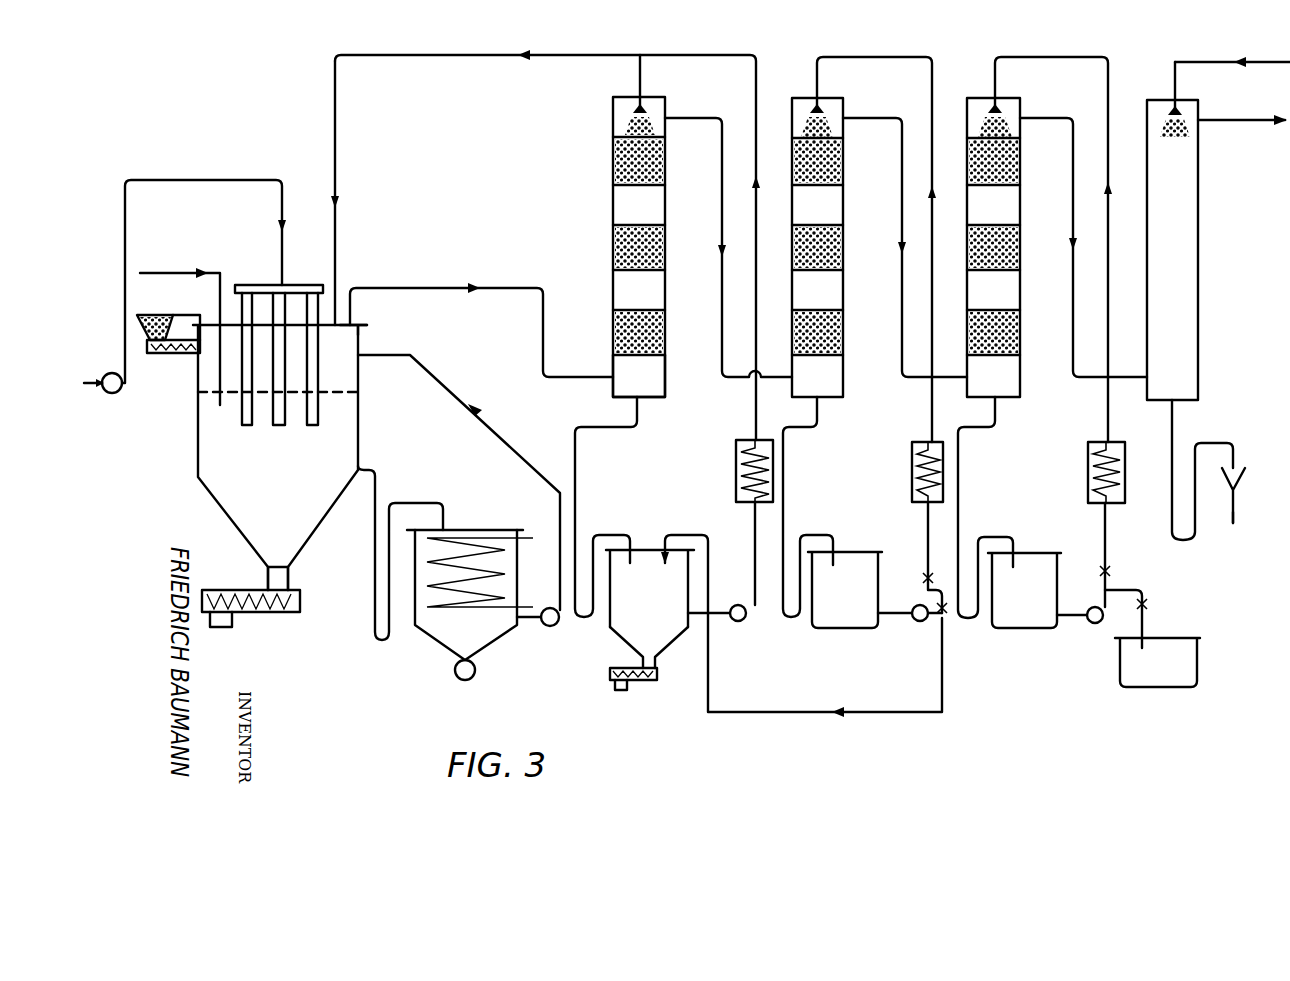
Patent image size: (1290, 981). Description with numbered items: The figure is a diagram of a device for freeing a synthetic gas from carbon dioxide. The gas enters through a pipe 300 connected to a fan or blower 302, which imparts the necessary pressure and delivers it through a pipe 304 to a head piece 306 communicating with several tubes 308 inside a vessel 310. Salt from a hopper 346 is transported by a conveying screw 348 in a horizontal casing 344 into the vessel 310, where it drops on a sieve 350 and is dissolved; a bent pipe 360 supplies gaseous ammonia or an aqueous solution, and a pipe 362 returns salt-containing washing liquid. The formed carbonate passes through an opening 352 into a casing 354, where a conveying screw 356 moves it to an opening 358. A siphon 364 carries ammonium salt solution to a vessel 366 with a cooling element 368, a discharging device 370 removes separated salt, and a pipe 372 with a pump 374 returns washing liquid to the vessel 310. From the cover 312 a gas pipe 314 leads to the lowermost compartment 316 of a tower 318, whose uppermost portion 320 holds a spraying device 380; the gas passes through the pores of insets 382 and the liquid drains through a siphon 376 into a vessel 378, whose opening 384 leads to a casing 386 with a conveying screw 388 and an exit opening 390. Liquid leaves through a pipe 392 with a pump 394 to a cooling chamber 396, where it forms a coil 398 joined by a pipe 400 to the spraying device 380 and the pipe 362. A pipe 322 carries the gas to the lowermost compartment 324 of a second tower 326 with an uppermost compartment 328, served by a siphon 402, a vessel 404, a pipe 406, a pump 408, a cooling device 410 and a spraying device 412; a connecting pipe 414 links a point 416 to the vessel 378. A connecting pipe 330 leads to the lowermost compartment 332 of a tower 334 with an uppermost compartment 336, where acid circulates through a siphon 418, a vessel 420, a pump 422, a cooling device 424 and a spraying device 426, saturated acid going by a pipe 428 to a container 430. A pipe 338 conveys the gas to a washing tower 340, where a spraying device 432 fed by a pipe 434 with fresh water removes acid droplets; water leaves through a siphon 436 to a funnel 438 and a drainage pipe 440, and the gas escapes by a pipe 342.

The pipe 300 is at (104, 397).
The fan or blower 302 is at (120, 392).
The pipe 304 is at (202, 180).
The head piece 306 is at (263, 283).
The tubes 308 is at (247, 427).
The vessel 310 is at (360, 422).
The cover 312 is at (358, 330).
The gas pipe 314 is at (468, 295).
The lowermost compartment 316 is at (652, 399).
The tower 318 is at (645, 213).
The uppermost portion 320 is at (668, 108).
The pipe 322 is at (718, 297).
The lowermost compartment 324 is at (832, 398).
The second tower 326 is at (845, 302).
The uppermost compartment 328 is at (845, 110).
The connecting pipe 330 is at (900, 158).
The lowermost compartment 332 is at (1008, 398).
The tower 334 is at (1022, 238).
The uppermost compartment 336 is at (1022, 118).
The pipe 338 is at (1071, 160).
The washing tower 340 is at (1200, 215).
The pipe 342 is at (1232, 108).
The horizontal casing 344 is at (152, 355).
The hopper 346 is at (180, 322).
The conveying screw 348 is at (178, 356).
The sieve 350 is at (332, 395).
The opening 352 is at (278, 568).
The casing 354 is at (278, 614).
The conveying screw 356 is at (283, 600).
The opening 358 is at (225, 630).
The bent pipe 360 is at (172, 273).
The pipe 362 is at (338, 198).
The siphon 364 is at (372, 607).
The vessel 366 is at (487, 632).
The cooling element 368 is at (480, 608).
The discharging device 370 is at (462, 680).
The pipe 372 is at (527, 458).
The pump 374 is at (548, 627).
The siphon 376 is at (578, 470).
The vessel 378 is at (630, 632).
The spraying device 380 is at (630, 113).
The insets 382 is at (612, 248).
The opening 384 is at (650, 652).
The casing 386 is at (612, 676).
The conveying screw 388 is at (640, 681).
The exit opening 390 is at (621, 692).
The pipe 392 is at (712, 620).
The pump 394 is at (742, 622).
The cooling chamber 396 is at (733, 455).
The coil 398 is at (750, 455).
The pipe 400 is at (738, 48).
The siphon 402 is at (785, 490).
The vessel 404 is at (840, 618).
The pipe 406 is at (893, 616).
The pump 408 is at (918, 622).
The cooling device 410 is at (910, 490).
The spraying device 412 is at (820, 110).
The connecting pipe 414 is at (748, 718).
The point 416 is at (928, 590).
The siphon 418 is at (970, 512).
The vessel 420 is at (1020, 630).
The pump 422 is at (1095, 624).
The cooling device 424 is at (1088, 472).
The spraying device 426 is at (998, 110).
The pipe 428 is at (1147, 618).
The container 430 is at (1198, 665).
The spraying device 432 is at (1172, 112).
The pipe 434 is at (1198, 50).
The siphon 436 is at (1180, 545).
The funnel 438 is at (1240, 484).
The drainage pipe 440 is at (1235, 525).